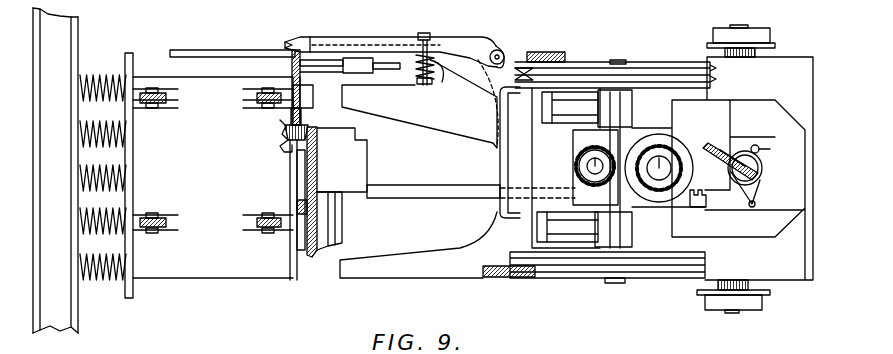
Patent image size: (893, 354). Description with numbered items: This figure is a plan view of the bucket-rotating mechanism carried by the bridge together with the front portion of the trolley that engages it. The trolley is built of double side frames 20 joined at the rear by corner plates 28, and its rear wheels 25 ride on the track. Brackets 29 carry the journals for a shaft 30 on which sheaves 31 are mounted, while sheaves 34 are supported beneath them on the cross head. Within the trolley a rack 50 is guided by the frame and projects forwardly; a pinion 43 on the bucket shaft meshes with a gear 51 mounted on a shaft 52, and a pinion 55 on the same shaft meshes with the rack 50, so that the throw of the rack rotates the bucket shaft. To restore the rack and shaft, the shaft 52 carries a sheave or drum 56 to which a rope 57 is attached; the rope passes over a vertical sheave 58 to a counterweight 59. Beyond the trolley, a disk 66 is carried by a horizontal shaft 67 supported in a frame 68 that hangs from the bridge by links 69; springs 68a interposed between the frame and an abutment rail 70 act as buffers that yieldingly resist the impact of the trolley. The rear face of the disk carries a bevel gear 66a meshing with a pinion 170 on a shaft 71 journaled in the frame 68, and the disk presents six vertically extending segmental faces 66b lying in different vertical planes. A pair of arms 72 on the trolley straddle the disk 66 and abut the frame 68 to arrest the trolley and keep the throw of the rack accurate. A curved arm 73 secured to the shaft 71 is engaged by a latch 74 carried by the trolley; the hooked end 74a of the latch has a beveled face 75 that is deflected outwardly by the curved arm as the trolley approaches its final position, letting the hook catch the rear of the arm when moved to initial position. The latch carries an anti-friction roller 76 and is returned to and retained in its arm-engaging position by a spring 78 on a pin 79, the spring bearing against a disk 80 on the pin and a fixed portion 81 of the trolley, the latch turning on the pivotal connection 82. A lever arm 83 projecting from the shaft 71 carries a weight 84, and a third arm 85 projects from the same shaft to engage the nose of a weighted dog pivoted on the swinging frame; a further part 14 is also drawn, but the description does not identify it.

The pinion gear 14 is at (589, 160).
The double side frames 20 is at (594, 62).
The rear wheels 25 is at (766, 36).
The rear corner plates 28 is at (672, 168).
The brackets 29 is at (557, 107).
The shaft 30 is at (624, 205).
The sheaves 31 is at (622, 78).
The sheaves 34 is at (528, 83).
The pinion 43 is at (578, 174).
The rack 50 is at (450, 196).
The gear 51 is at (555, 136).
The shaft 52 is at (661, 172).
The pinion 55 is at (706, 140).
The sheave or drum 56 is at (639, 134).
The rope 57 is at (680, 143).
The vertical sheave 58 is at (733, 152).
The counterweight 59 is at (765, 178).
The disk 66 is at (342, 160).
The bevel gear 66a is at (316, 248).
The segmental faces 66b is at (326, 214).
The shaft 67 is at (296, 178).
The frame 68 is at (145, 177).
The springs 68a is at (128, 62).
The links 69 is at (258, 101).
The abutment rail 70 is at (80, 43).
The shaft 71 is at (306, 120).
The arms 72 is at (430, 112).
The curved arm 73 is at (237, 57).
The latch 74 is at (338, 37).
The hooked end 74a is at (267, 45).
The beveled face 75 is at (268, 44).
The anti-friction roller 76 is at (296, 50).
The spring 78 is at (441, 74).
The pin 79 is at (431, 35).
The disk 80 is at (424, 82).
The fixed portion of the trolley 81 is at (421, 42).
The pivotal connection 82 is at (498, 49).
The lever arm 83 is at (335, 62).
The weight 84 is at (350, 74).
The third arm 85 is at (322, 77).
The pinion 170 is at (283, 130).